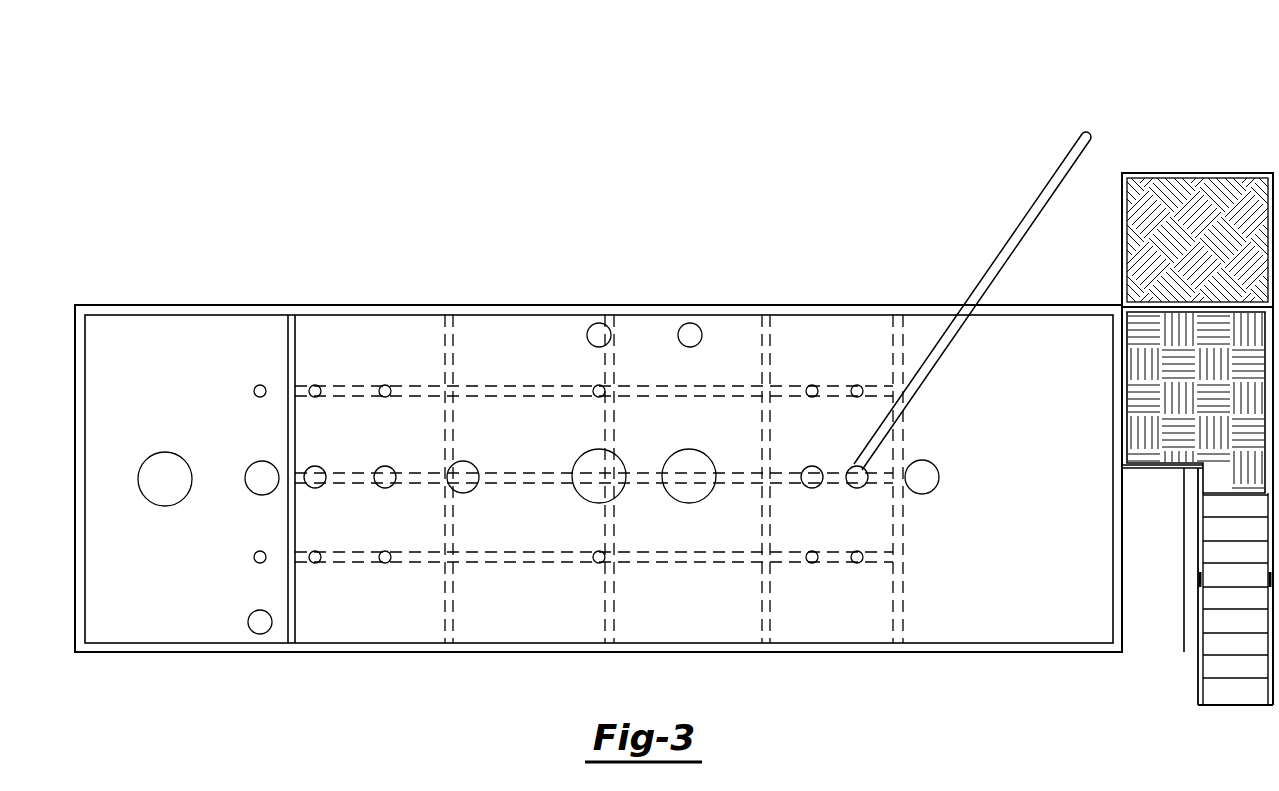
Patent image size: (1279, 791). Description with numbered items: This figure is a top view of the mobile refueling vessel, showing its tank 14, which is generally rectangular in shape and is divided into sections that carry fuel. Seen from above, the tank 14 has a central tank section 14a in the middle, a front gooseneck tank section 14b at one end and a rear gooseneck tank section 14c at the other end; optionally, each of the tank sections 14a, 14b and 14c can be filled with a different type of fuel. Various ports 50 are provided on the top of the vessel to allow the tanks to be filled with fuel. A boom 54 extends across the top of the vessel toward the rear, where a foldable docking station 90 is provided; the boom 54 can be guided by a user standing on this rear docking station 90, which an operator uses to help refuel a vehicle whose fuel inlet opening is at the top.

The tank 14 is at (508, 337).
The central tank section 14a is at (483, 620).
The front gooseneck tank section 14b is at (183, 620).
The rear gooseneck tank section 14c is at (958, 622).
The ports 50 is at (163, 497).
The boom 54 is at (1000, 258).
The foldable docking station 90 is at (1205, 175).